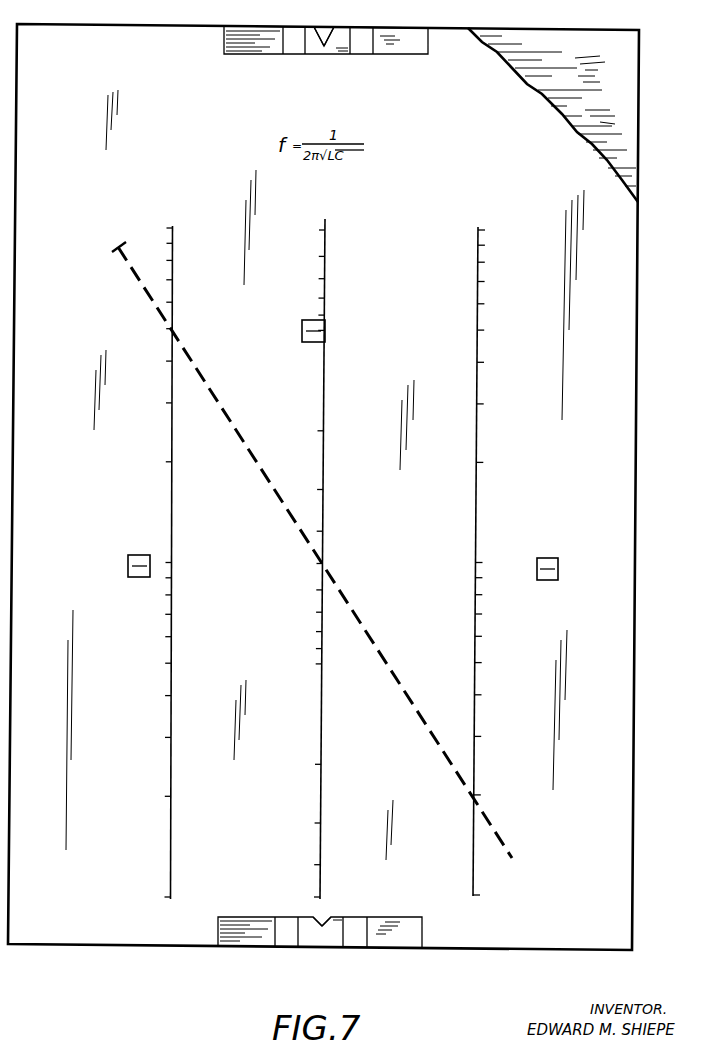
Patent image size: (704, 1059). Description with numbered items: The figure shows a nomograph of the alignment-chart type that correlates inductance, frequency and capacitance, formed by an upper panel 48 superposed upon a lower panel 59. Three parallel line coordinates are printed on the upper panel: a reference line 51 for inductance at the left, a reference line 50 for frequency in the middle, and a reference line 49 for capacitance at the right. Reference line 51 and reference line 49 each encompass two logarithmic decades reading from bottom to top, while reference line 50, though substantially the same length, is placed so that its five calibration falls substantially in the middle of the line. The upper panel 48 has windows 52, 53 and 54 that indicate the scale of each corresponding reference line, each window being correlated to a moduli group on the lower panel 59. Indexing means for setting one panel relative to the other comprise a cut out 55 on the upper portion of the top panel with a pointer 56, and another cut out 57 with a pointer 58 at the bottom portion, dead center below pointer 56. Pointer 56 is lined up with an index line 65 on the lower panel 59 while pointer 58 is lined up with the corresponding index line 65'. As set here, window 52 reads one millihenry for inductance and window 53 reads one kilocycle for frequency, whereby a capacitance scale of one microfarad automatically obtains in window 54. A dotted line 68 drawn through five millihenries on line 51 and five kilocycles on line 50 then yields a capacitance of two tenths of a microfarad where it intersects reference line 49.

The upper panel 48 is at (628, 262).
The reference line for capacitance 49 is at (476, 522).
The reference line for frequency 50 is at (325, 242).
The reference line for inductance 51 is at (172, 497).
The window 52 is at (128, 562).
The window 53 is at (302, 328).
The window 54 is at (558, 567).
The cut out 55 is at (403, 54).
The pointer 56 is at (322, 54).
The cut out 57 is at (408, 917).
The pointer 58 is at (322, 928).
The lower panel 59 is at (630, 105).
The index line 65 is at (313, 27).
The index line 65' is at (302, 950).
The dotted line 68 is at (116, 259).